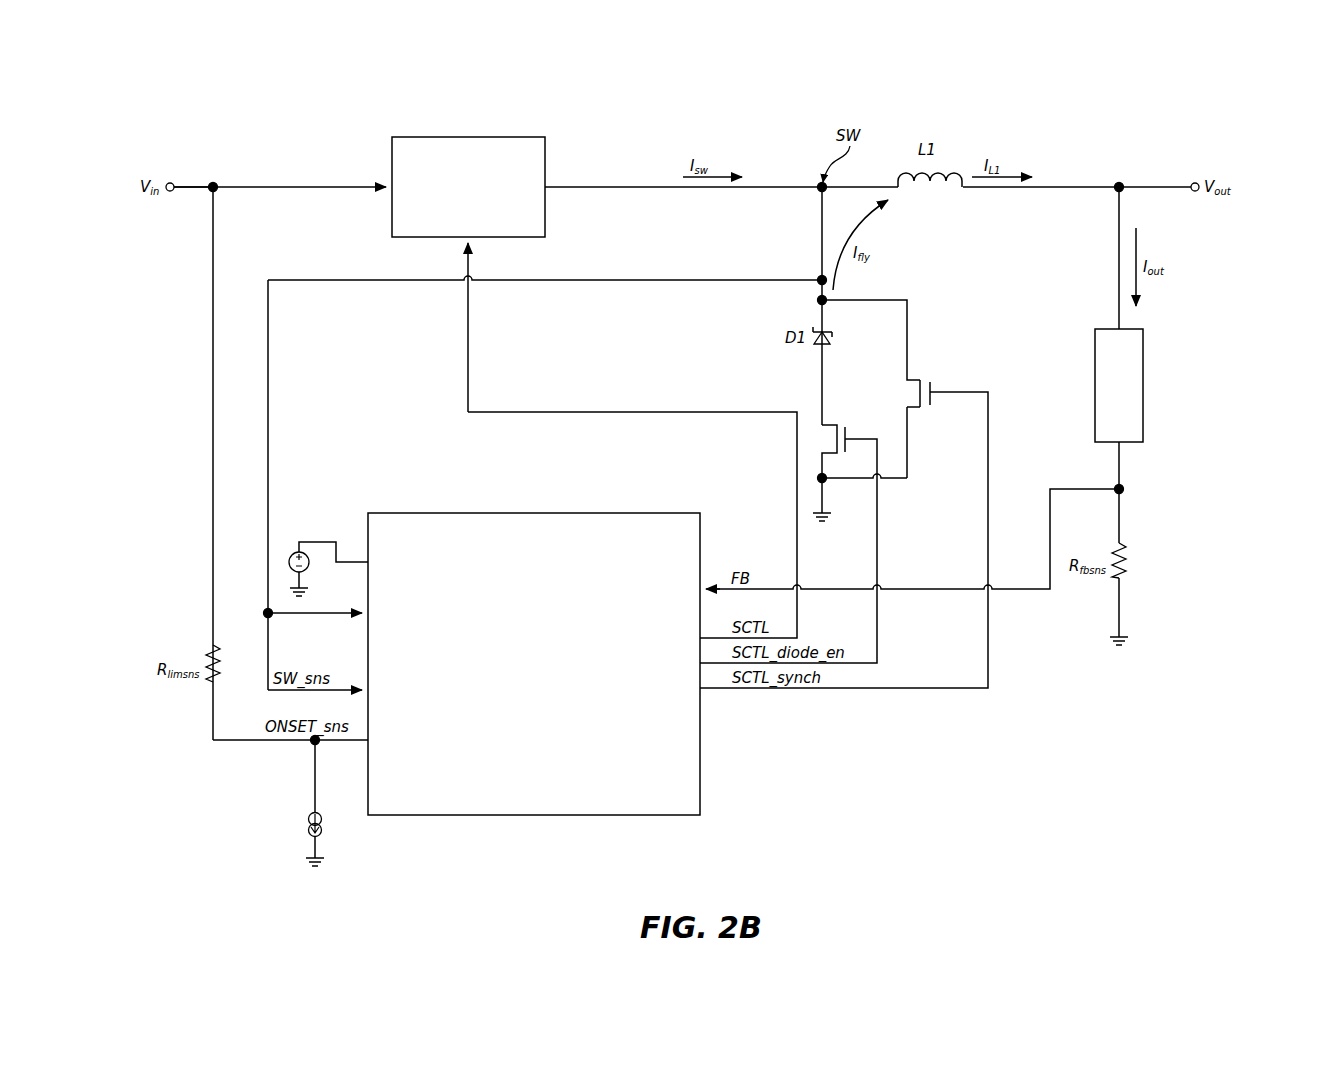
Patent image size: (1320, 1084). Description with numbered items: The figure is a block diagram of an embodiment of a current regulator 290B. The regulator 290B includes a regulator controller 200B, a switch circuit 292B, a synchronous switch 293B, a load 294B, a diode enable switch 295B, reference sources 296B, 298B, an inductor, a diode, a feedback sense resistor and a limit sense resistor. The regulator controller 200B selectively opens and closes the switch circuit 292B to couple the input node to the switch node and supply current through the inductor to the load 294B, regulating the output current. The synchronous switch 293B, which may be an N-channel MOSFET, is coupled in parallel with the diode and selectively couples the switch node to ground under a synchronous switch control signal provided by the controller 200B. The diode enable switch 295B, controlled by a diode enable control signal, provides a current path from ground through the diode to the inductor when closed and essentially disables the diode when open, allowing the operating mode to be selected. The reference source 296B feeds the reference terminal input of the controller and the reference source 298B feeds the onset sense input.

The current regulator 290B is at (1082, 136).
The switch circuit 292B is at (467, 137).
The regulator controller 200B is at (533, 513).
The synchronous switch 293B is at (921, 381).
The load 294B is at (1095, 364).
The diode enable switch 295B is at (838, 426).
The reference source 296B is at (309, 571).
The reference source 298B is at (309, 824).